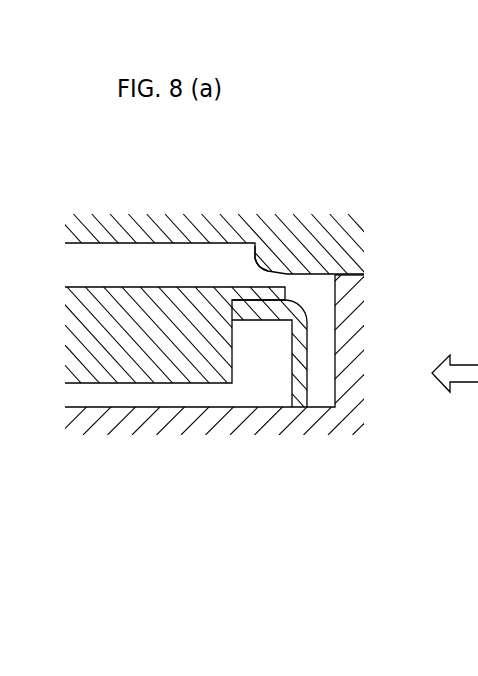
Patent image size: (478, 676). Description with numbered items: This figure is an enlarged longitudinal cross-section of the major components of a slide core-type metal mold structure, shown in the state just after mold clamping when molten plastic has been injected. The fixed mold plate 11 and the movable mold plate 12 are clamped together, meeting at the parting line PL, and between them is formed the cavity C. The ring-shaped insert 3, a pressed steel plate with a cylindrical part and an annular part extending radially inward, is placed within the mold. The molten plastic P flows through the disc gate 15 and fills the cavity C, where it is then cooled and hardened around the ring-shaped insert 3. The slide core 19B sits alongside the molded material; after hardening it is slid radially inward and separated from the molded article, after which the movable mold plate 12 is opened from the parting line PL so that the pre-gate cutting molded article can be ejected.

The fixed mold plate 11 is at (310, 247).
The movable mold plate 12 is at (309, 418).
The disc gate 15 is at (256, 262).
The slide core 19B is at (138, 383).
The ring-shaped insert 3 is at (259, 320).
The parting line PL is at (350, 278).
The cavity C is at (78, 246).
The molten plastic P is at (120, 258).